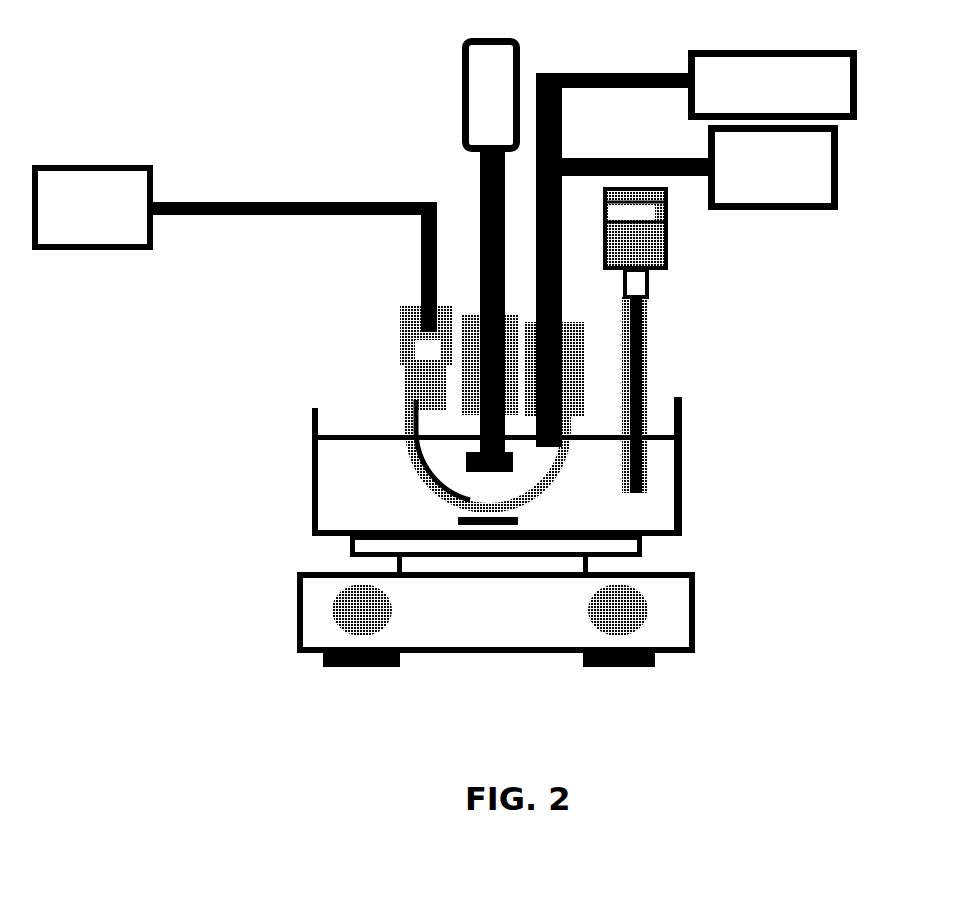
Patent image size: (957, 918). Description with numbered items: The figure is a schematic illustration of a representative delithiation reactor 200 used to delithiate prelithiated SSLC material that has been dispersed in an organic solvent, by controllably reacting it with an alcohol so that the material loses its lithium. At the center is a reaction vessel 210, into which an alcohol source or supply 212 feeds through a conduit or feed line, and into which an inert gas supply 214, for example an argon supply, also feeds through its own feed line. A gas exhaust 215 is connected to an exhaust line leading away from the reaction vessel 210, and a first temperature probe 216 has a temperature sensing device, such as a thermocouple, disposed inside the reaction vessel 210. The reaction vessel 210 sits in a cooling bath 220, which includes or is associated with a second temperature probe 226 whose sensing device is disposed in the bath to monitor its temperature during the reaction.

The delithiation reactor 200 is at (810, 700).
The reaction vessel 210 is at (424, 479).
The alcohol source or supply 212 is at (461, 128).
The inert gas supply 214 is at (100, 252).
The gas exhaust 215 is at (858, 97).
The first temperature probe 216 is at (812, 212).
The cooling bath 220 is at (264, 478).
The second temperature probe 226 is at (669, 245).